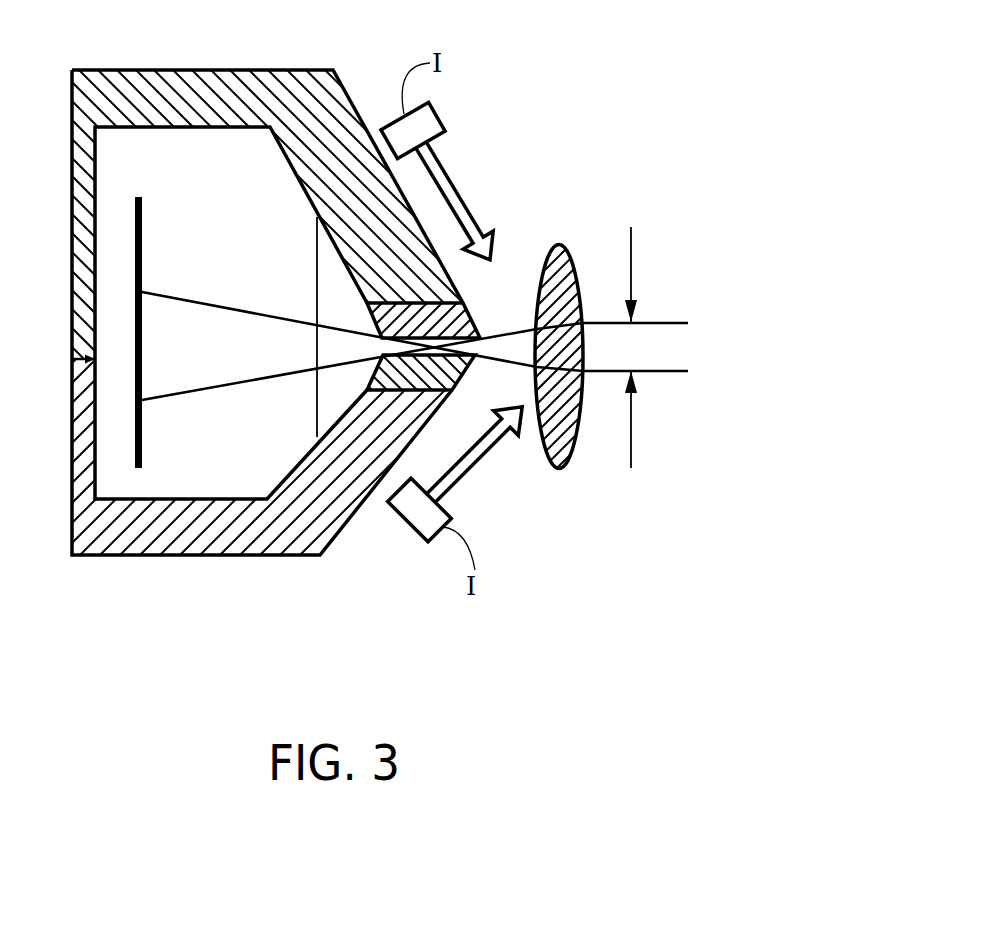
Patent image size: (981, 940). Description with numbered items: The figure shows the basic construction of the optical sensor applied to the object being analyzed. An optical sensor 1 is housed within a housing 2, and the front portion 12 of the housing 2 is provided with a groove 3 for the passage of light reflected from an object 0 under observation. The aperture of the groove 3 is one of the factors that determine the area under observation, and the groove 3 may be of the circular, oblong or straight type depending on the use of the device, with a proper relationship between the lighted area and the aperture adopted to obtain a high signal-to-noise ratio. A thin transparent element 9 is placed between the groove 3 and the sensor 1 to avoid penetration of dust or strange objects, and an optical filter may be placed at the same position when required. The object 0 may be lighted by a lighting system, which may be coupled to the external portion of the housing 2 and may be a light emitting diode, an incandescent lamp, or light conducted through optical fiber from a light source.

The optical sensor 1 is at (142, 227).
The housing 2 is at (102, 540).
The groove 3 is at (425, 310).
The thin transparent element 9 is at (327, 263).
The front portion 12 is at (420, 228).
The object 0 is at (560, 245).